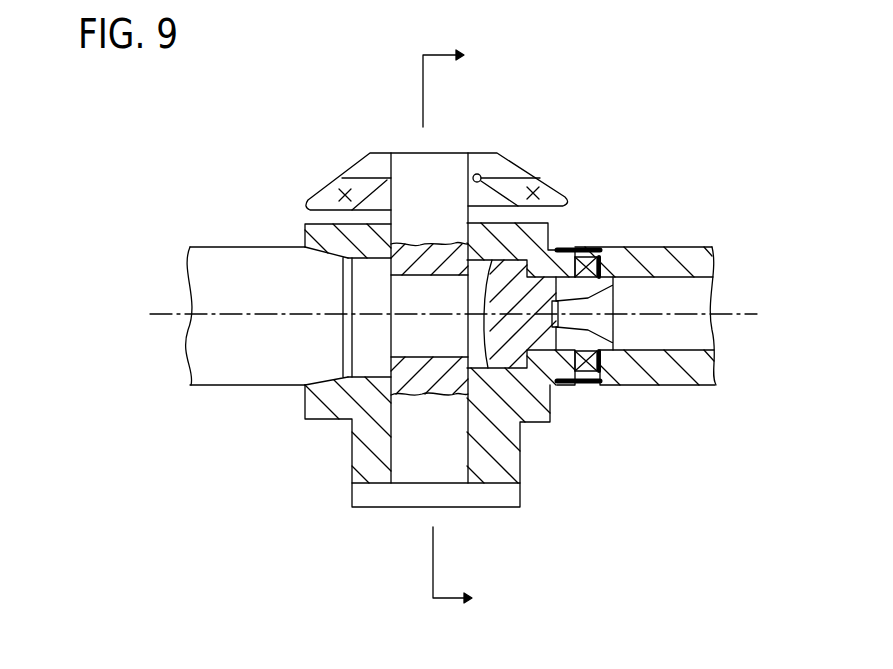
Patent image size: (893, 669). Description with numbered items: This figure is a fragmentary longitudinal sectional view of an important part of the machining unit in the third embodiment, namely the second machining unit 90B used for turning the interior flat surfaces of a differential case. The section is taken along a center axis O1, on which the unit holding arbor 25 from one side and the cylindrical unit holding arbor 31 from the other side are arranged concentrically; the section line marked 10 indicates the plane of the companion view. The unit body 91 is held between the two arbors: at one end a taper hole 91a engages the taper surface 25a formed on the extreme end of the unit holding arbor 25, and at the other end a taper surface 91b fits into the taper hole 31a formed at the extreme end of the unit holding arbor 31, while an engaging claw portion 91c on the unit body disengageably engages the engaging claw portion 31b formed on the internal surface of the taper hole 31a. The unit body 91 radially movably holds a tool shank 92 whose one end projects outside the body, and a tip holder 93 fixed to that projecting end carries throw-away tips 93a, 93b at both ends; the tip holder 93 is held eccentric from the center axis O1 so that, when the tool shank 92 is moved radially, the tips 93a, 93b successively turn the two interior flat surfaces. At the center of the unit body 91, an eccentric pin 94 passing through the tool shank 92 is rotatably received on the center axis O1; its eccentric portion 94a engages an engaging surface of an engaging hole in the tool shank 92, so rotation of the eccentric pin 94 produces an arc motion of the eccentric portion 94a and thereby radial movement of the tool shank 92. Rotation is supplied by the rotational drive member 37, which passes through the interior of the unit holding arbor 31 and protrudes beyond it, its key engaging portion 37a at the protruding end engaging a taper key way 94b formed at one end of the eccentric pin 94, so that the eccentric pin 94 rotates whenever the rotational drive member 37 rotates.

The section line 10- 10 is at (467, 331).
The unit holding arbor 25 is at (222, 262).
The taper surface 25a is at (318, 268).
The unit holding arbor 31 is at (683, 252).
The taper hole 31a is at (575, 378).
The engaging claw portion 31b is at (625, 375).
The rotational drive member 37 is at (698, 295).
The key engaging portion 37a is at (605, 323).
The second machining unit 90B is at (535, 495).
The unit body 91 is at (365, 428).
The taper hole 91a is at (298, 367).
The taper surface 91b is at (560, 244).
The engaging claw portion 91c is at (582, 262).
The tool shank 92 is at (437, 465).
The tip holder 93 is at (480, 166).
The throw-away tip 93a is at (330, 198).
The throw-away tip 93b is at (543, 192).
The eccentric pin 94 is at (522, 425).
The eccentric portion 94a is at (420, 343).
The taper key way 94b is at (630, 295).
The center axis O1 is at (425, 318).